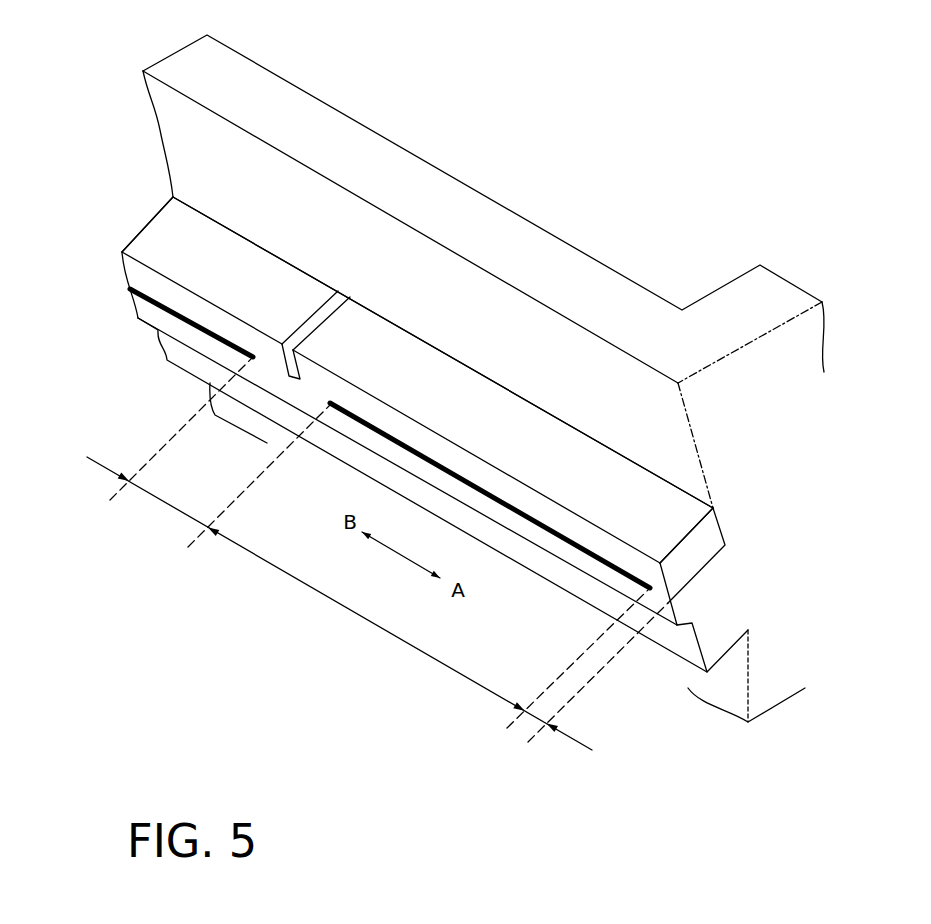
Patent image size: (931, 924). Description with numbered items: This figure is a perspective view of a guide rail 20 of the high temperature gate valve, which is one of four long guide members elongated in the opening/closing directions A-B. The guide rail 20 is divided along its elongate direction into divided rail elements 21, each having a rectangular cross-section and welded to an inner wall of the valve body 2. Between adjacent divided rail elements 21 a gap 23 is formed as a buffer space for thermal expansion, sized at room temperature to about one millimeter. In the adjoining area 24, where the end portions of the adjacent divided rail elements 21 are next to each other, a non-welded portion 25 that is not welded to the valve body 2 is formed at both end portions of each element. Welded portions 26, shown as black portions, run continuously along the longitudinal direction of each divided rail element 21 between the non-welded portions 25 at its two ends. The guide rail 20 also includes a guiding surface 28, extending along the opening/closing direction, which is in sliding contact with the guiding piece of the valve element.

The valve body 2 is at (468, 220).
The guide rail 20 is at (185, 238).
The divided rail element 21 is at (153, 250).
The gap 23 is at (287, 352).
The adjoining area 24 is at (318, 310).
The non-welded portion 25 is at (162, 500).
The welded portion 26 is at (98, 466).
The guiding surface 28 is at (240, 263).